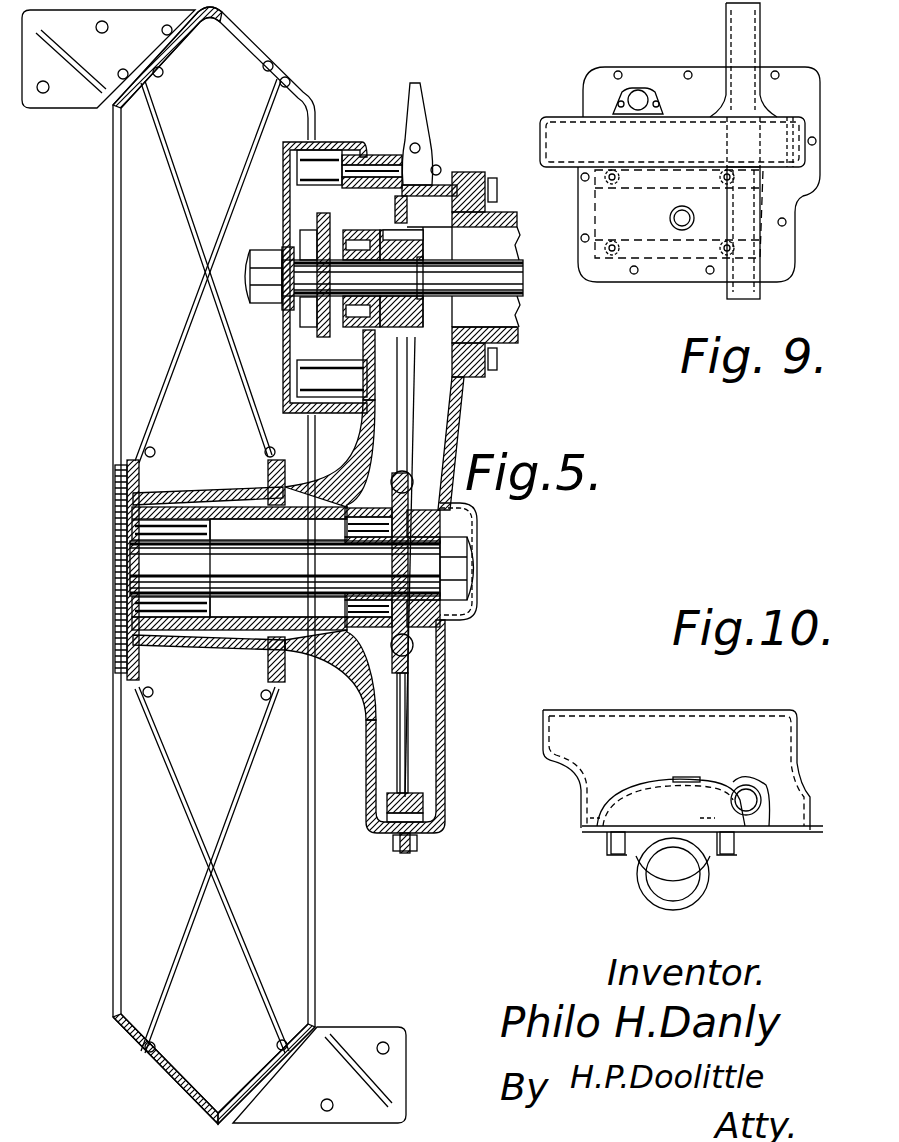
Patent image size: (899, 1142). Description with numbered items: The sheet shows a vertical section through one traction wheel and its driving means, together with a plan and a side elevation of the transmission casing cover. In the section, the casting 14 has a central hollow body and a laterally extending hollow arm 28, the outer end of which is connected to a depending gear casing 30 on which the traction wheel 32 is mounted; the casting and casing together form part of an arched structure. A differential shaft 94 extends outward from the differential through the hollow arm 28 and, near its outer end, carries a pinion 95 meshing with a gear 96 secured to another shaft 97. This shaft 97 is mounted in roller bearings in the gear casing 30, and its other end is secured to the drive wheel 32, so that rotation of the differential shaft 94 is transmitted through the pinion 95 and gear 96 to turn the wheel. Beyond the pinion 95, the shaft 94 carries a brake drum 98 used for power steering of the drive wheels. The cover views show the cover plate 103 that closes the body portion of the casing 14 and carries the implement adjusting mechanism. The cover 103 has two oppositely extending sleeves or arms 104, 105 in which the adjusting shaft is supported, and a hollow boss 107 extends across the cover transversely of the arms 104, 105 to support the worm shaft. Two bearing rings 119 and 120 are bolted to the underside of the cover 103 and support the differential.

In FIG. 5, the traction wheel 32 is at (113, 402).
In FIG. 5, the brake drum 98 is at (322, 143).
In FIG. 5, the pinion 95 is at (413, 233).
In FIG. 5, the laterally extending arm 28 is at (503, 212).
In FIG. 5, the differential shaft 94 is at (510, 256).
In FIG. 5, the casting 14 is at (505, 342).
In FIG. 5, the gear 96 is at (420, 400).
In FIG. 5, the shaft 97 is at (430, 563).
In FIG. 5, the gear casing 30 is at (445, 688).
In FIG. 9, the cover plate 103 is at (667, 72).
In FIG. 10, the cover plate 103 is at (582, 820).
In FIG. 9, the sleeve or arm 104 is at (727, 18).
In FIG. 9, the sleeve or arm 105 is at (760, 293).
In FIG. 10, the sleeve or arm 105 is at (754, 817).
In FIG. 9, the hollow boss 107 is at (563, 123).
In FIG. 10, the hollow boss 107 is at (617, 718).
In FIG. 9, the bearing ring 119 is at (640, 187).
In FIG. 9, the bearing ring 120 is at (670, 253).
In FIG. 10, the bearing ring 120 is at (633, 857).